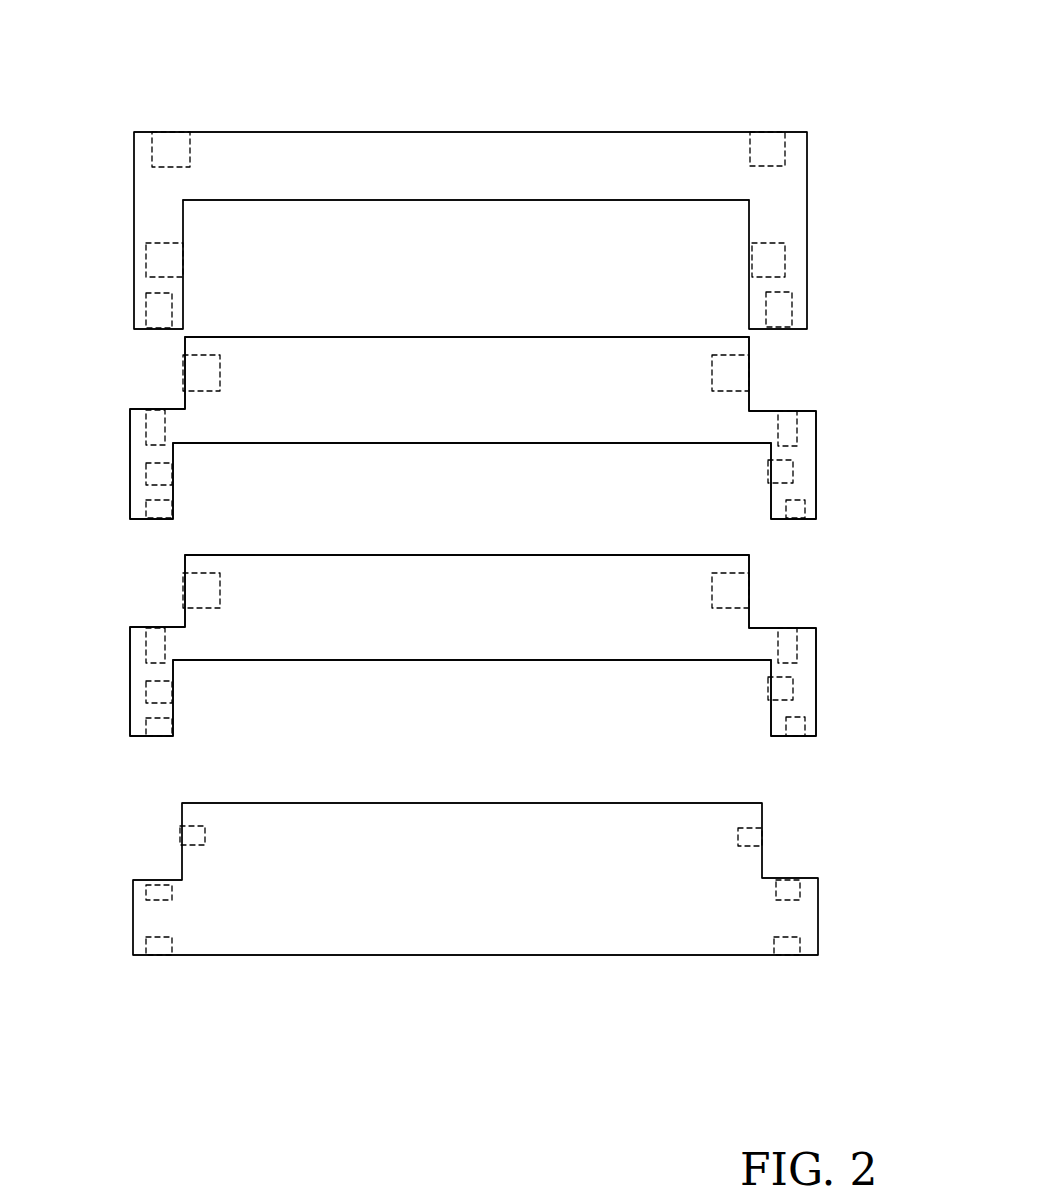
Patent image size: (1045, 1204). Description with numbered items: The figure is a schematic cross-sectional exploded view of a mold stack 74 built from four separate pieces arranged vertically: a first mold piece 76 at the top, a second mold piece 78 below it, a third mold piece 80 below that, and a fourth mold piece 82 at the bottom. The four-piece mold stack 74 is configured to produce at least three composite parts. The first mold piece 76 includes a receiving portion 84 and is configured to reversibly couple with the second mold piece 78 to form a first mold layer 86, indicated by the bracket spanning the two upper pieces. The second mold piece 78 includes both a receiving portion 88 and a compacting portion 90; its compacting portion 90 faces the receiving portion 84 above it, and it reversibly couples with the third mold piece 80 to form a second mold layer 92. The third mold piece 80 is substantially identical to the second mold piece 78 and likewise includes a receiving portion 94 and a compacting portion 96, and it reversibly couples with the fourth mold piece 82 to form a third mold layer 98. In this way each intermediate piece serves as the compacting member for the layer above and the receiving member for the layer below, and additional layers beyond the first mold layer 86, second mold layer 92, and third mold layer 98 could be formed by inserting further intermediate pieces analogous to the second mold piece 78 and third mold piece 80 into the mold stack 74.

The mold stack 74 is at (860, 96).
The first mold piece 76 is at (807, 228).
The second mold piece 78 is at (816, 465).
The third mold piece 80 is at (816, 655).
The fourth mold piece 82 is at (818, 893).
The receiving portion 84 is at (442, 200).
The first mold layer 86 is at (101, 132).
The receiving portion 88 is at (433, 443).
The compacting portion 90 is at (463, 337).
The second mold layer 92 is at (873, 411).
The receiving portion 94 is at (436, 660).
The compacting portion 96 is at (395, 555).
The third mold layer 98 is at (101, 627).